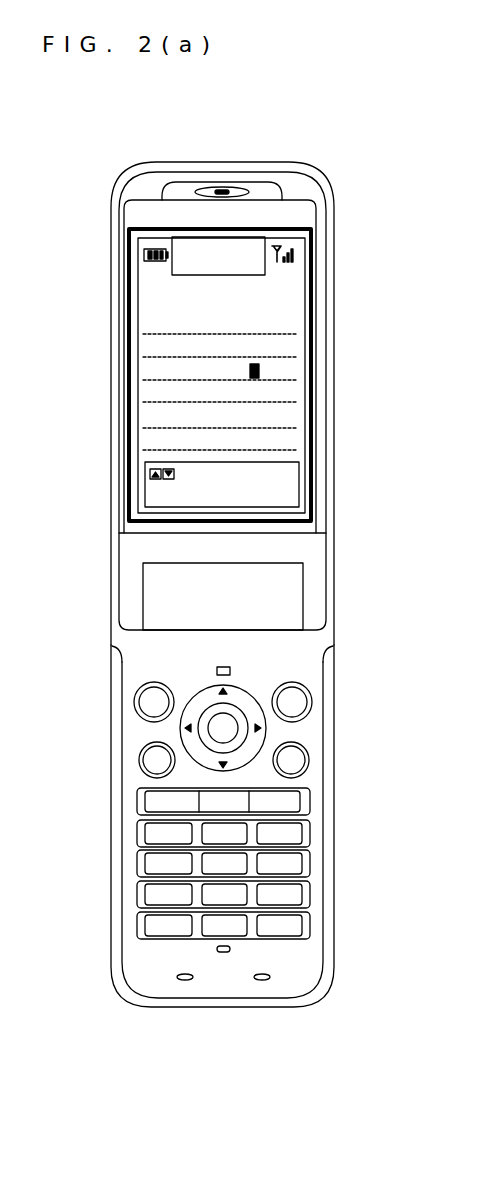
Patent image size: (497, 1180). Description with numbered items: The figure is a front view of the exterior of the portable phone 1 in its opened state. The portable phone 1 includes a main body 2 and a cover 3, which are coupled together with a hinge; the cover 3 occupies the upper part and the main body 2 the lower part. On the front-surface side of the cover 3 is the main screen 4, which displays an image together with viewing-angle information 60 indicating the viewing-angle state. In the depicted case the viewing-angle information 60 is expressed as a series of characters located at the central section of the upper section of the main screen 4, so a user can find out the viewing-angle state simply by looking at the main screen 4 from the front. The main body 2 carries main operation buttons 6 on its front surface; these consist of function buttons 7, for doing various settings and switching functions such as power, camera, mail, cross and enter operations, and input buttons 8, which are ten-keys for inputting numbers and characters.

The portable phone 1 is at (66, 256).
The main body 2 is at (110, 790).
The cover 3 is at (110, 452).
The main screen 4 is at (298, 373).
The viewing-angle information 60 is at (247, 243).
The main operation buttons 6 is at (386, 722).
The function buttons 7 is at (340, 680).
The input buttons 8 is at (340, 813).